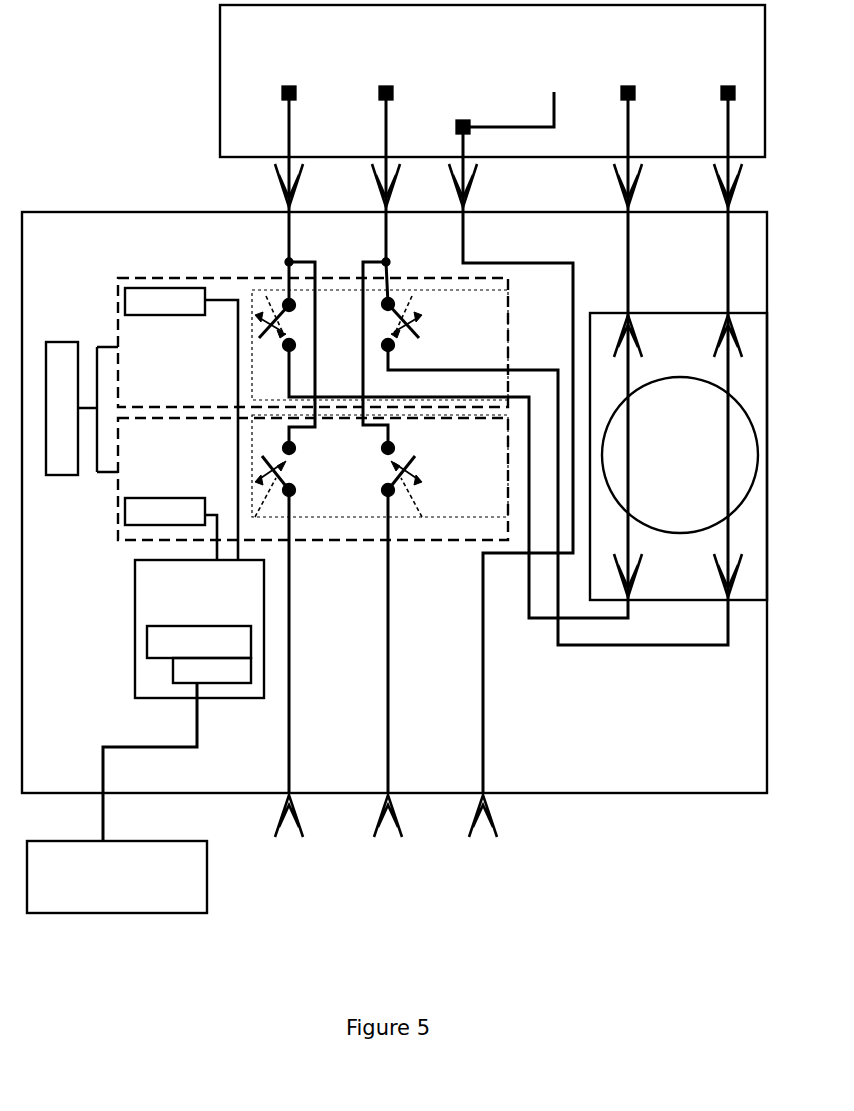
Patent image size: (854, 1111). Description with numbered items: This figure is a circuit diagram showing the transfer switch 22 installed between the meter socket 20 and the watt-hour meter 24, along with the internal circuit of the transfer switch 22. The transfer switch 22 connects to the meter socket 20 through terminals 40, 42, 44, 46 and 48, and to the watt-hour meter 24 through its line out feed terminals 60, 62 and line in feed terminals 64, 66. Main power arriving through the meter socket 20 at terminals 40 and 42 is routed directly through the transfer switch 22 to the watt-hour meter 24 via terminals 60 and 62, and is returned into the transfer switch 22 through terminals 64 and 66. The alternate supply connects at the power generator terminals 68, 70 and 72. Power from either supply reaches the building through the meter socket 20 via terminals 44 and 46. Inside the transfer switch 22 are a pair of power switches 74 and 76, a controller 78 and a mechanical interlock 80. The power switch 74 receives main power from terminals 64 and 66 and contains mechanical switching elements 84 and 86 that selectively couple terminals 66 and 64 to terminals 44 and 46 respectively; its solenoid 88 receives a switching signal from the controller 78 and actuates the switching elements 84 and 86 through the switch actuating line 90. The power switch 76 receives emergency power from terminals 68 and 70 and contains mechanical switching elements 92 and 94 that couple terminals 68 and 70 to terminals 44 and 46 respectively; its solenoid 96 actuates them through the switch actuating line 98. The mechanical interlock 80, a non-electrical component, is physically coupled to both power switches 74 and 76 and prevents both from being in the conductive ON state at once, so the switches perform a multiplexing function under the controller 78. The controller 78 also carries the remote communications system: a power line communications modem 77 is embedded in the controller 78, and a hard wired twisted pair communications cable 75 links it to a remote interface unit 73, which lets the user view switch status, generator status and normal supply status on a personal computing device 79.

The meter socket 20 is at (220, 35).
The transfer switch 22 is at (88, 212).
The watt-hour meter 24 is at (680, 455).
The terminal 40 is at (620, 184).
The terminal 42 is at (716, 184).
The terminal 44 is at (276, 188).
The terminal 46 is at (374, 188).
The terminal 48 is at (474, 184).
The line out feed terminal 60 is at (636, 322).
The line out feed terminal 62 is at (716, 349).
The line in feed terminal 64 is at (720, 554).
The line in feed terminal 66 is at (640, 589).
The power generator terminal 68 is at (282, 808).
The power generator terminal 70 is at (384, 806).
The power generator terminal 72 is at (480, 804).
The remote interface unit 73 is at (147, 650).
The power switch 74 is at (118, 282).
The twisted pair communications cable 75 is at (102, 815).
The power switch 76 is at (116, 530).
The power line communications modem 77 is at (173, 678).
The controller 78 is at (134, 618).
The personal computing device 79 is at (207, 878).
The mechanical interlock 80 is at (66, 476).
The mechanical switching element 84 is at (268, 334).
The mechanical switching element 86 is at (418, 322).
The solenoid 88 is at (165, 316).
The switch actuating line 90 is at (344, 293).
The mechanical switching element 92 is at (264, 466).
The mechanical switching element 94 is at (418, 466).
The solenoid 96 is at (172, 498).
The switch actuating line 98 is at (344, 514).